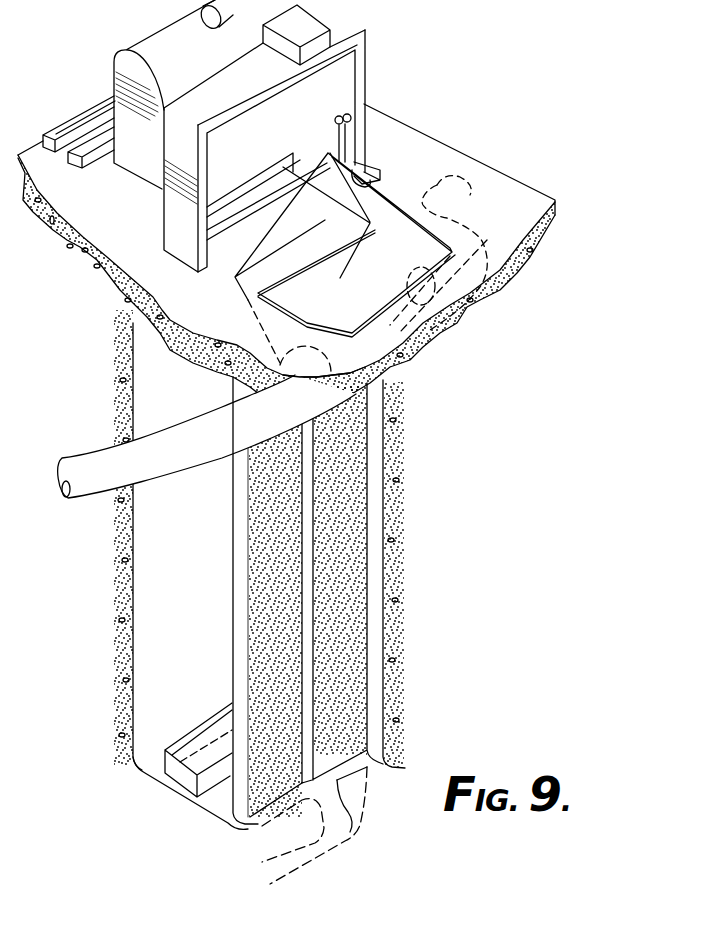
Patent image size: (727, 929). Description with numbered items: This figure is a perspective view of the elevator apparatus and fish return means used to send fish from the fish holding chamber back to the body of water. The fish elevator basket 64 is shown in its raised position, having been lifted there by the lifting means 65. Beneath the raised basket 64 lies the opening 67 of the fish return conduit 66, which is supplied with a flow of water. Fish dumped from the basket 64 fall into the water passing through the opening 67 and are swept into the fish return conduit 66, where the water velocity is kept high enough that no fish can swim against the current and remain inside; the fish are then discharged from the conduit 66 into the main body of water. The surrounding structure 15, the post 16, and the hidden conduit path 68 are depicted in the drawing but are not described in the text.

The concrete deck with pit 15 is at (120, 552).
The support post 16 is at (360, 663).
The clamp bracket / base plate 64 is at (197, 798).
The dispensing machine 65 is at (380, 26).
The cable 66 is at (80, 452).
The chute 67 is at (372, 310).
The hidden conduit 68 is at (487, 203).